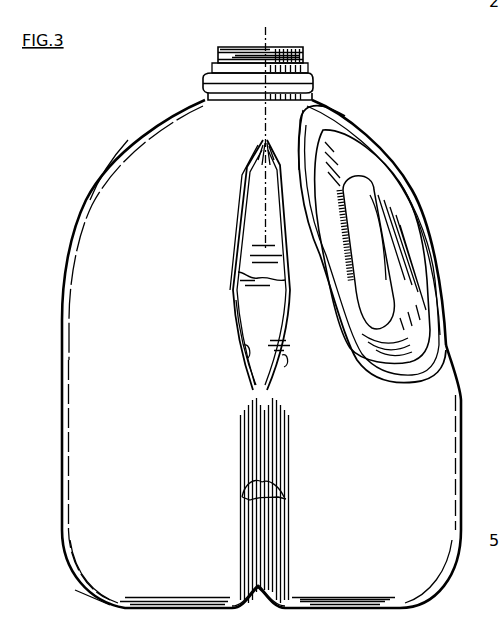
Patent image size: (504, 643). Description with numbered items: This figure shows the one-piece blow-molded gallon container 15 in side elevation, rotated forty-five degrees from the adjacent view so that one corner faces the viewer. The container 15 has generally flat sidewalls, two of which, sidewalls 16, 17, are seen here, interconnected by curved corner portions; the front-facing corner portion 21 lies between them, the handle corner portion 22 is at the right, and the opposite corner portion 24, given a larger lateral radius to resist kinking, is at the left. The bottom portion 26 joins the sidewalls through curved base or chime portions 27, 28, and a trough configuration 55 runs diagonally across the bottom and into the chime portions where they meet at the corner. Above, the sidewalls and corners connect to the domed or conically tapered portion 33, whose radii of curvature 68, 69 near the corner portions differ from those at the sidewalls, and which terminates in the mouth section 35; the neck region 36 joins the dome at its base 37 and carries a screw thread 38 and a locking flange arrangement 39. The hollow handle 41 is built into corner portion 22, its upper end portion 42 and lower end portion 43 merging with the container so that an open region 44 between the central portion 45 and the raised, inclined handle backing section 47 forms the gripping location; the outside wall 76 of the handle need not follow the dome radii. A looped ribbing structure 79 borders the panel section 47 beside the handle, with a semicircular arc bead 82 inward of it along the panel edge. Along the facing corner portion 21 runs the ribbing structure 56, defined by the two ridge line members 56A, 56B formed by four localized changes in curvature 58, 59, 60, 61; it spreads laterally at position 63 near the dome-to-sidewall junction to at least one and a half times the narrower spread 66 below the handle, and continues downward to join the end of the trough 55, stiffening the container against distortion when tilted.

The container 15 is at (352, 107).
The flat sidewall 16 is at (111, 500).
The flat sidewall 17 is at (345, 525).
The curved corner portion 21 is at (158, 570).
The curved corner portion 22 is at (460, 440).
The curved corner portion 24 is at (60, 430).
The bottom portion 26 is at (330, 613).
The curved base portion 27 is at (123, 608).
The curved base portion 28 is at (402, 567).
The conically tapered portion 33 is at (172, 122).
The mouth section 35 is at (275, 47).
The neck region 36 is at (212, 57).
The base of neck region 37 is at (313, 97).
The screw thread 38 is at (243, 53).
The locking flange arrangement 39 is at (210, 72).
The hollow handle 41 is at (419, 228).
The upper end portion of handle 42 is at (350, 165).
The lower end portion of handle 43 is at (415, 320).
The open region 44 is at (378, 213).
The central portion of handle 45 is at (388, 254).
The handle backing section 47 is at (338, 257).
The trough configuration 55 is at (258, 592).
The ribbing structure 56 is at (246, 245).
The ridge line member 56A is at (248, 187).
The ridge line member 56B is at (280, 445).
The localized change in curvature 58 is at (238, 323).
The localized change in curvature 59 is at (247, 352).
The localized change in curvature 60 is at (277, 360).
The localized change in curvature 61 is at (272, 350).
The spread 63 is at (238, 285).
The spread 66 is at (240, 487).
The radius of curvature 68 is at (127, 147).
The radius of curvature 69 is at (258, 141).
The outside wall of handle 76 is at (352, 117).
The ribbing structure 79 is at (301, 160).
The arc bead 82 is at (324, 225).